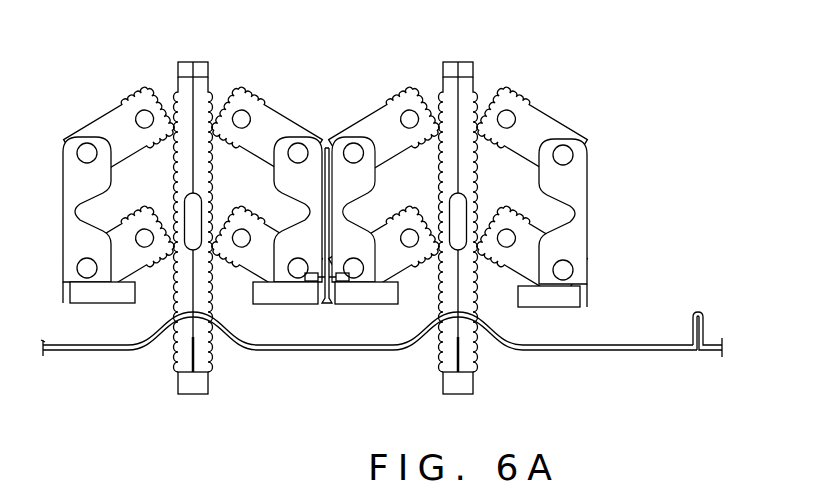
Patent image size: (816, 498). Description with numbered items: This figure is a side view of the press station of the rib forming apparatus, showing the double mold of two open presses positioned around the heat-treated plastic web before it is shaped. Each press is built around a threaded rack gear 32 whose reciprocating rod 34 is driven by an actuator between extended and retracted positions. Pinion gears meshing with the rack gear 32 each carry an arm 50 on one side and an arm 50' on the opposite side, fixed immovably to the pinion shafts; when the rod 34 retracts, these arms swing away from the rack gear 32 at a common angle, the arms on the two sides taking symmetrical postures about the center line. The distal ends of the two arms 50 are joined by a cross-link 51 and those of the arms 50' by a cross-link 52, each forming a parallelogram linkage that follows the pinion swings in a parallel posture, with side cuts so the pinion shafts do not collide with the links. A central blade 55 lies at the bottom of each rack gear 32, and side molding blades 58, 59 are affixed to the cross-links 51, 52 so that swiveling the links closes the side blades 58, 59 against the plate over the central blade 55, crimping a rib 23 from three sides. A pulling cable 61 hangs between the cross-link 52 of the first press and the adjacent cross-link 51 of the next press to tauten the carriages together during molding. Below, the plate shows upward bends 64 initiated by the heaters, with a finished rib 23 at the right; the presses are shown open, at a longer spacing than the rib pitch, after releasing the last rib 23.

The rib 23 is at (703, 312).
The rack gear 32 is at (332, 192).
The reciprocating rod 34 is at (210, 68).
The arm 50 is at (247, 182).
The arm 50' is at (398, 176).
The cross-link 51 is at (67, 177).
The cross-link 52 is at (298, 140).
The central blade 55 is at (208, 387).
The side molding blade 58 is at (100, 296).
The side molding blade 59 is at (307, 297).
The pulling cable 61 is at (328, 304).
The upward bend 64 is at (163, 340).